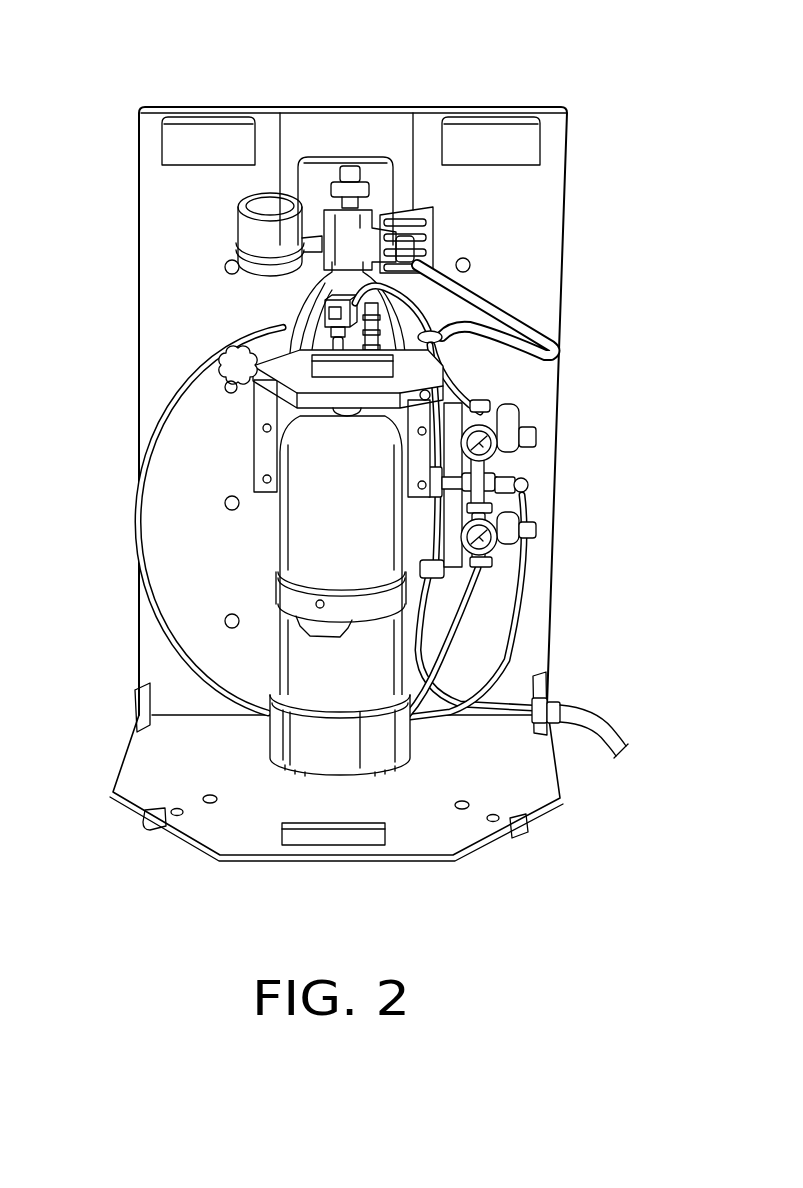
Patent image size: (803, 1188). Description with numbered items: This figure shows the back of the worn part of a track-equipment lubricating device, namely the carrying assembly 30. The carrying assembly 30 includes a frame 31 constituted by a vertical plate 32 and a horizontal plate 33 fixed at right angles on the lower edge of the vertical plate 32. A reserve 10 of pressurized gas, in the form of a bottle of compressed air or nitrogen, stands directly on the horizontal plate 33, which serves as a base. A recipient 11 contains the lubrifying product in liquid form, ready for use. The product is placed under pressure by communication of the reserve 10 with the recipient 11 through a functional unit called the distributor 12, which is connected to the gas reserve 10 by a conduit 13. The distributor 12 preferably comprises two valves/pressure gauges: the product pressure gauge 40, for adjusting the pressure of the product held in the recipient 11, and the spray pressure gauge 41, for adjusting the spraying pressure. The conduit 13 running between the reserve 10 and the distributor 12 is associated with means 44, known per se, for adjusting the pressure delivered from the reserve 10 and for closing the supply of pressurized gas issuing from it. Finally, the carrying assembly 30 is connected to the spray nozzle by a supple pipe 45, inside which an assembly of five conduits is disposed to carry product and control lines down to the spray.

The reserve of pressurized gas 10 is at (315, 663).
The recipient 11 is at (325, 533).
The distributor 12 is at (528, 470).
The conduit 13 is at (535, 336).
The carrying assembly 30 is at (208, 108).
The frame 31 is at (498, 110).
The vertical plate 32 is at (517, 218).
The horizontal plate 33 is at (497, 783).
The product pressure gauge 40 is at (520, 428).
The spray pressure gauge 41 is at (535, 527).
The means for adjusting the pressure 44 is at (313, 225).
The supple pipe 45 is at (603, 708).